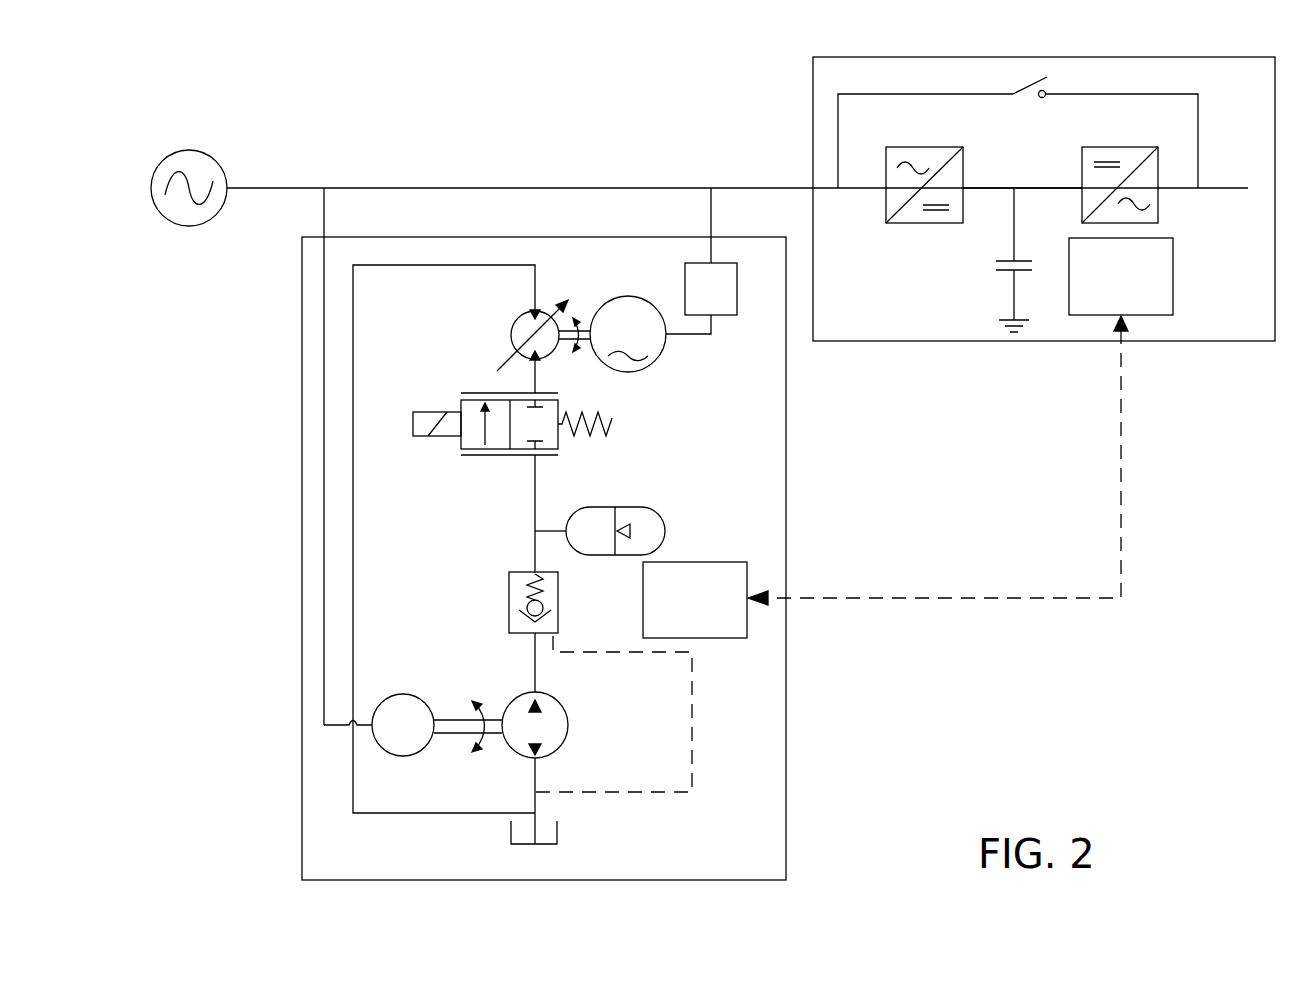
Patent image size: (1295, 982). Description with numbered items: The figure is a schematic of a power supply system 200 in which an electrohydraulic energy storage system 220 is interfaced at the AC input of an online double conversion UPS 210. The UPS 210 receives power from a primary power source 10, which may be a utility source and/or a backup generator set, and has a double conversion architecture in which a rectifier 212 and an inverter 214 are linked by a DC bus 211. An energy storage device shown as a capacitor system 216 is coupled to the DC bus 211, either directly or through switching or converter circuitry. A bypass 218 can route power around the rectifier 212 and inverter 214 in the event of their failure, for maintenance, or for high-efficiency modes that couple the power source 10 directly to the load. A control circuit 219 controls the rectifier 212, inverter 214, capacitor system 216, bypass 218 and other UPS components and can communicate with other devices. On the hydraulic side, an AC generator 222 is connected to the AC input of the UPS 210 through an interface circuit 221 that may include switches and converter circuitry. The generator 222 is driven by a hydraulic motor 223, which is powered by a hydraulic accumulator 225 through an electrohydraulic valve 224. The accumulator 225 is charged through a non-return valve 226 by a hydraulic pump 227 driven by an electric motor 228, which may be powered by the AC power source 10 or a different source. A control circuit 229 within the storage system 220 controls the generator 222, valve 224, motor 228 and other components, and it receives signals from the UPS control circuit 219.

The primary power source 10 is at (189, 150).
The power supply system 200 is at (1097, 656).
The online double conversion UPS 210 is at (1043, 57).
The DC bus 211 is at (993, 188).
The rectifier 212 is at (927, 147).
The inverter 214 is at (1102, 147).
The capacitor system 216 is at (966, 268).
The bypass 218 is at (1062, 80).
The control circuit 219 is at (1173, 277).
The electrohydraulic energy storage system 220 is at (544, 237).
The interface circuit 221 is at (685, 290).
The AC generator 222 is at (628, 296).
The hydraulic motor 223 is at (511, 334).
The electrohydraulic valve 224 is at (413, 424).
The hydraulic accumulator 225 is at (633, 507).
The non-return valve 226 is at (509, 605).
The hydraulic pump 227 is at (568, 725).
The electric motor 228 is at (405, 694).
The control circuit 229 is at (695, 562).